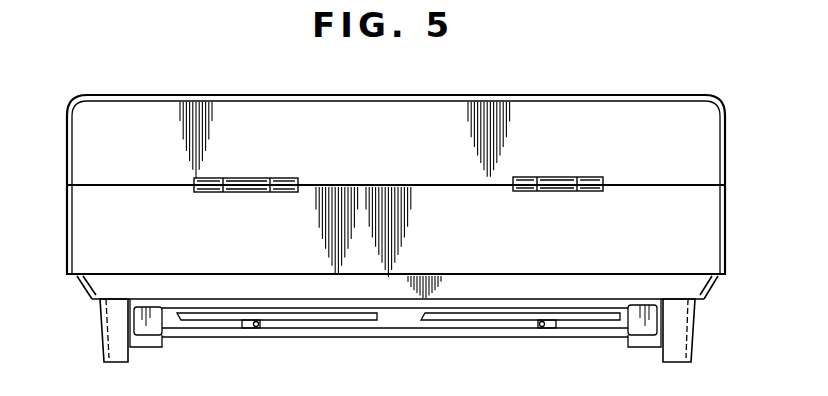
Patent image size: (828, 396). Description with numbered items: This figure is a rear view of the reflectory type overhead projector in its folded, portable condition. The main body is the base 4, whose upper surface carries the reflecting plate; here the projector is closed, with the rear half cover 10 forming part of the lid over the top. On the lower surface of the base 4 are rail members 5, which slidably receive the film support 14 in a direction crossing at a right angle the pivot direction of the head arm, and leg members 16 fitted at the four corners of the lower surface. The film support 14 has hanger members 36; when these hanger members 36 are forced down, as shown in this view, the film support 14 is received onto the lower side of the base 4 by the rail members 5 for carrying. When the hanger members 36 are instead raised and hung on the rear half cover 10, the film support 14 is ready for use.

The rear half cover 10 is at (658, 117).
The base 4 is at (693, 232).
The film support 14 is at (405, 335).
The hanger members 36 is at (342, 315).
The leg members 16 is at (108, 352).
The rail members 5 is at (152, 337).